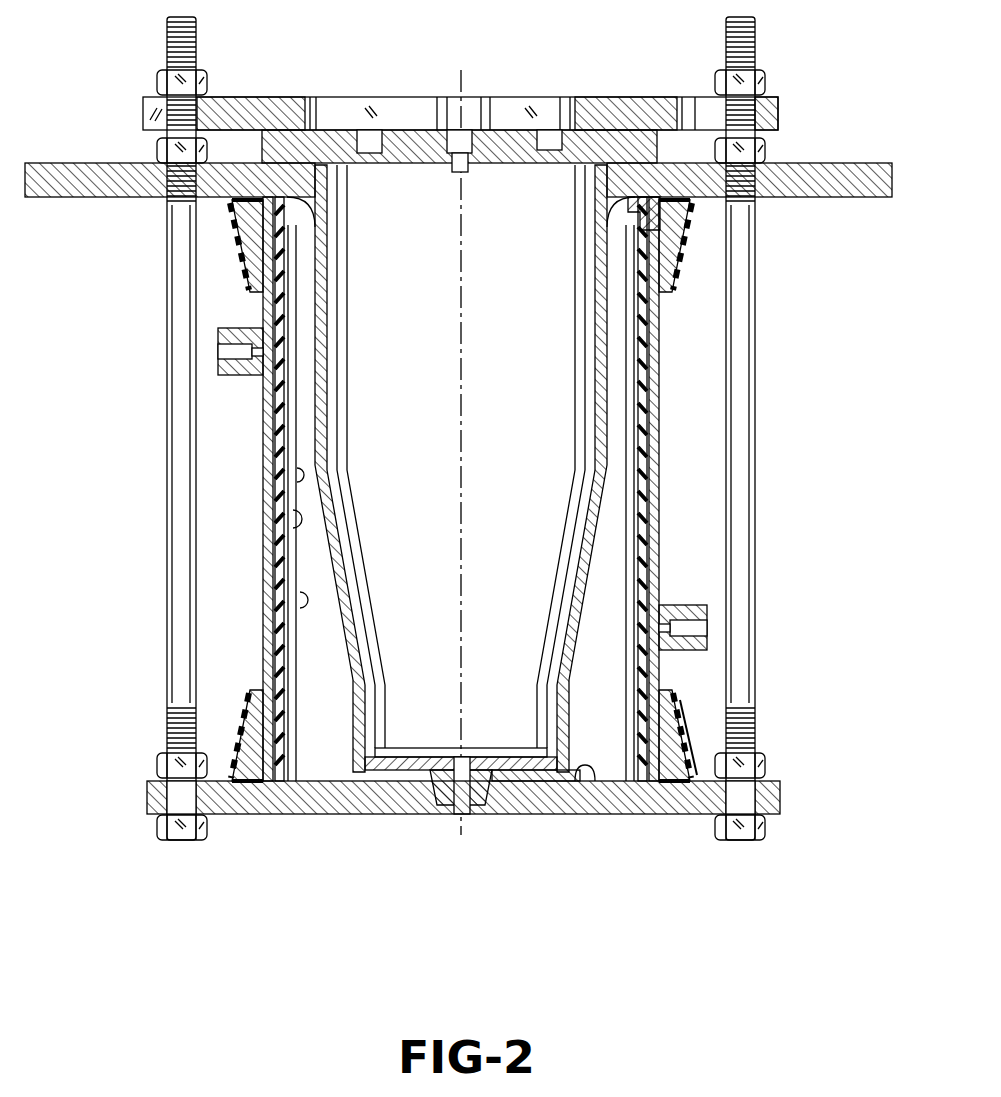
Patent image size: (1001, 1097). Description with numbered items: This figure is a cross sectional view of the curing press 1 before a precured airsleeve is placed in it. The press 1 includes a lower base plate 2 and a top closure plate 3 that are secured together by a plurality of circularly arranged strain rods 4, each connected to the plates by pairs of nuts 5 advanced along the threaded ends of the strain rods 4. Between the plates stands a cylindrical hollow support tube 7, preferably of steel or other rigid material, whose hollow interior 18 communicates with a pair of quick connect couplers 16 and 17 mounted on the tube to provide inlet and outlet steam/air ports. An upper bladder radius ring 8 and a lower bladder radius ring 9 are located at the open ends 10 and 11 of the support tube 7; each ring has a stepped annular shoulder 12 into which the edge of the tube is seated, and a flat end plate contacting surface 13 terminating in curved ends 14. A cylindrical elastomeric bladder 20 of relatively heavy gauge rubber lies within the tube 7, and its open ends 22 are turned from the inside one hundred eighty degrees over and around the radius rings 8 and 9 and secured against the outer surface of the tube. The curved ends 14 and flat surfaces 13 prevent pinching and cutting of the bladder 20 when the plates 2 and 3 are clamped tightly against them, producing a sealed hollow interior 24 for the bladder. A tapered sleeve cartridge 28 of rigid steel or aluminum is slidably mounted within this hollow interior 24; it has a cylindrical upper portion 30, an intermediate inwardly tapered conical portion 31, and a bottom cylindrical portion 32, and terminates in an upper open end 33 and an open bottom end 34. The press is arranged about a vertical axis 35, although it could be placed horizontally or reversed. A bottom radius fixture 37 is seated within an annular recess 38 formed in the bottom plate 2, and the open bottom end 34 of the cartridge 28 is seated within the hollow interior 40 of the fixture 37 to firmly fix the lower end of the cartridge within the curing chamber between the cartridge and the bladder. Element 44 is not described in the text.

The curing press 1 is at (808, 370).
The lower base plate 2 is at (650, 800).
The top closure plate 3 is at (860, 163).
The strain rods 4 is at (748, 470).
The nuts 5 is at (766, 152).
The support tube 7 is at (660, 348).
The upper bladder radius ring 8 is at (668, 255).
The lower bladder radius ring 9 is at (672, 722).
The upper open end 10 is at (250, 236).
The lower open end 11 is at (290, 768).
The stepped annular shoulder 12 is at (668, 778).
The flat end plate contacting surface 13 is at (238, 204).
The curved ends 14 is at (690, 212).
The quick connect coupler 16 is at (233, 378).
The quick connect coupler 17 is at (700, 605).
The hollow interior 18 is at (300, 527).
The elastomeric bladder 20 is at (648, 412).
The open ends 22 is at (690, 735).
The sealed hollow interior 24 is at (305, 602).
The tapered sleeve cartridge 28 is at (600, 508).
The cylindrical upper portion 30 is at (330, 327).
The intermediate inwardly tapered conical portion 31 is at (338, 540).
The bottom cylindrical portion 32 is at (360, 702).
The upper open end 33 is at (328, 202).
The open bottom end 34 is at (370, 772).
The vertical axis 35 is at (463, 412).
The bottom radius fixture 37 is at (532, 788).
The annular recess 38 is at (585, 776).
The hollow interior 40 is at (300, 478).
The top seal 44 is at (650, 202).